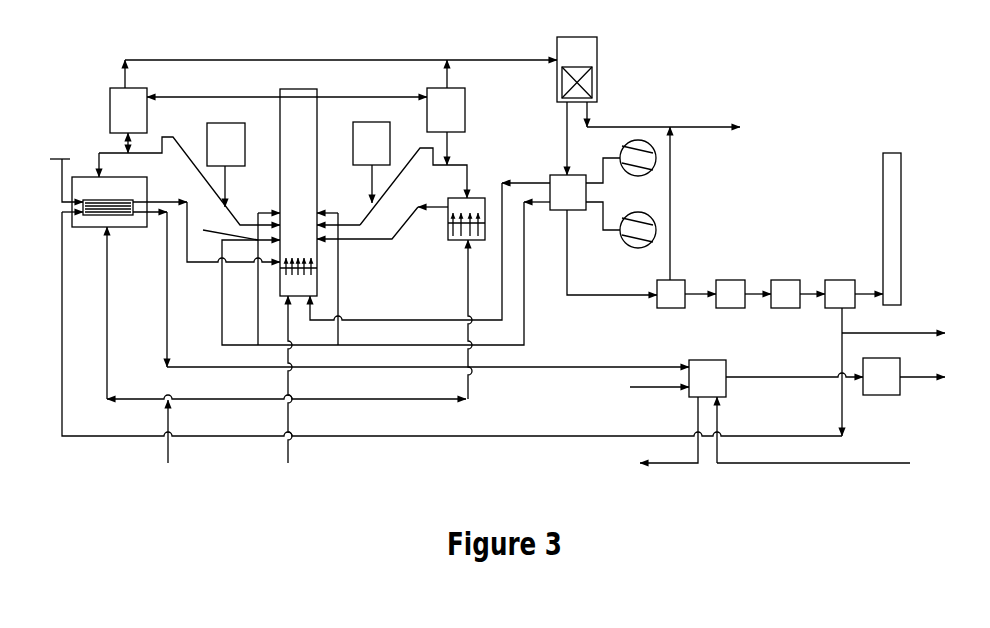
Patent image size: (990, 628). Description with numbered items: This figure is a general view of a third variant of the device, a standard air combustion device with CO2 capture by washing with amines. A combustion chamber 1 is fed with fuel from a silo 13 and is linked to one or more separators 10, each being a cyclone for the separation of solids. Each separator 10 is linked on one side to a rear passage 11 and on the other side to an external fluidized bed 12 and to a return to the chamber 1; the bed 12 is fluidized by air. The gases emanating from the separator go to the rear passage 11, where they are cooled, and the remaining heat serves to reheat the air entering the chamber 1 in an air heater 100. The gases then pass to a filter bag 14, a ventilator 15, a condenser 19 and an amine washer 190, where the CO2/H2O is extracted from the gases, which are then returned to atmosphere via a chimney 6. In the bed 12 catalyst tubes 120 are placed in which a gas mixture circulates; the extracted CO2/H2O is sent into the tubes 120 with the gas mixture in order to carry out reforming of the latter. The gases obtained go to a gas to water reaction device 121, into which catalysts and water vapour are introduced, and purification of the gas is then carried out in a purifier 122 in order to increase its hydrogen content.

The combustion chamber 1 is at (298, 192).
The chimney 6 is at (888, 201).
The separator 10 is at (287, 110).
The rear passage 11 is at (577, 69).
The external fluidized bed 12 is at (278, 208).
The silo 13 is at (371, 143).
The filter bag 14 is at (671, 294).
The ventilator 15 is at (730, 294).
The condenser 19 is at (785, 294).
The air heater 100 is at (568, 192).
The catalyst tubes 120 is at (87, 190).
The gas to water reaction device 121 is at (707, 378).
The purifier 122 is at (881, 376).
The amine washer 190 is at (840, 294).